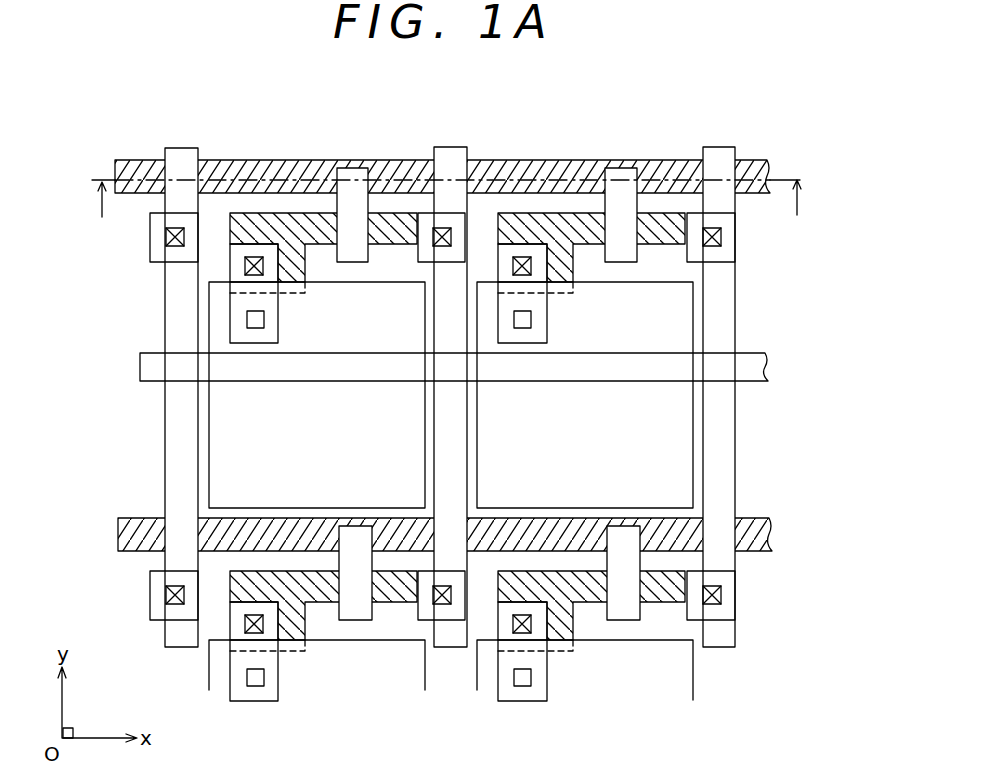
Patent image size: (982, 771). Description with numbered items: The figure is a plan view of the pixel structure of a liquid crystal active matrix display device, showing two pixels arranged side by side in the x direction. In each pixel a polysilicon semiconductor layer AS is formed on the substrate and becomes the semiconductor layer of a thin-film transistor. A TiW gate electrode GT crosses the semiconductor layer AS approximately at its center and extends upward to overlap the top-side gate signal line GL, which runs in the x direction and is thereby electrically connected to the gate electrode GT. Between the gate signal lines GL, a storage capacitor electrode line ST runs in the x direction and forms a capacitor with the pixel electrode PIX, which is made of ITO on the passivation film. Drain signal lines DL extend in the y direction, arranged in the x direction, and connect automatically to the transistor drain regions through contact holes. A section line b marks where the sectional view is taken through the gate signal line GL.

The gate signal line GL is at (748, 160).
The semiconductor layer AS is at (248, 213).
The drain signal line DL is at (187, 640).
The gate electrode GT is at (337, 201).
The storage capacitor electrode line ST is at (765, 352).
The pixel electrode PIX is at (209, 423).
The section line b- b is at (446, 201).